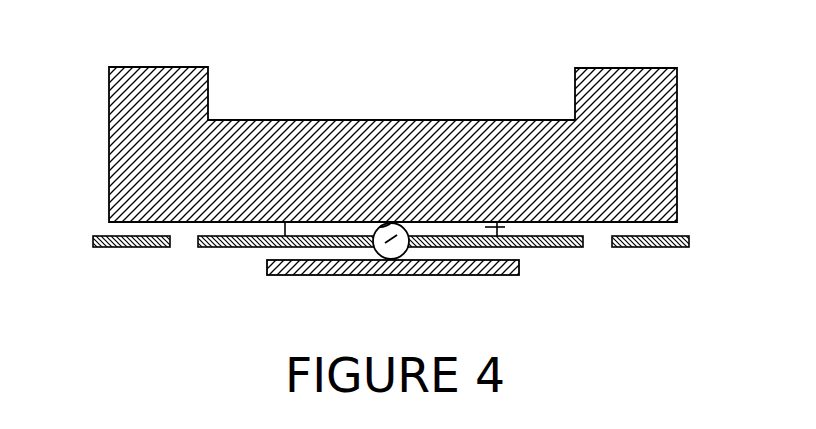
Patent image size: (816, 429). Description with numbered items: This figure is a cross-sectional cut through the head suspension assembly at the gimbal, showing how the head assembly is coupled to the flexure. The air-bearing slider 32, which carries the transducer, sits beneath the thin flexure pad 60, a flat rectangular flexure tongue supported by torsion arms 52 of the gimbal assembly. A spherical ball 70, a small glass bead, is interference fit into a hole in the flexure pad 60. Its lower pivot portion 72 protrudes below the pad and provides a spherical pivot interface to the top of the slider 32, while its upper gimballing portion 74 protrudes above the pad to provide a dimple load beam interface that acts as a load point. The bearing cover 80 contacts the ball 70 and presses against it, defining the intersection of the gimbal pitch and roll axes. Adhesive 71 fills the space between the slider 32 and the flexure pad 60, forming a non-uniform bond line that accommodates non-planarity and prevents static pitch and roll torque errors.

The air-bearing slider 32 is at (652, 183).
The torsion arms 52 is at (122, 248).
The flexure pad 60 is at (227, 248).
The spherical ball 70 is at (397, 235).
The adhesive 71 is at (505, 227).
The lower pivot portion 72 is at (389, 225).
The upper gimballing portion 74 is at (392, 259).
The bearing cover 80 is at (473, 277).